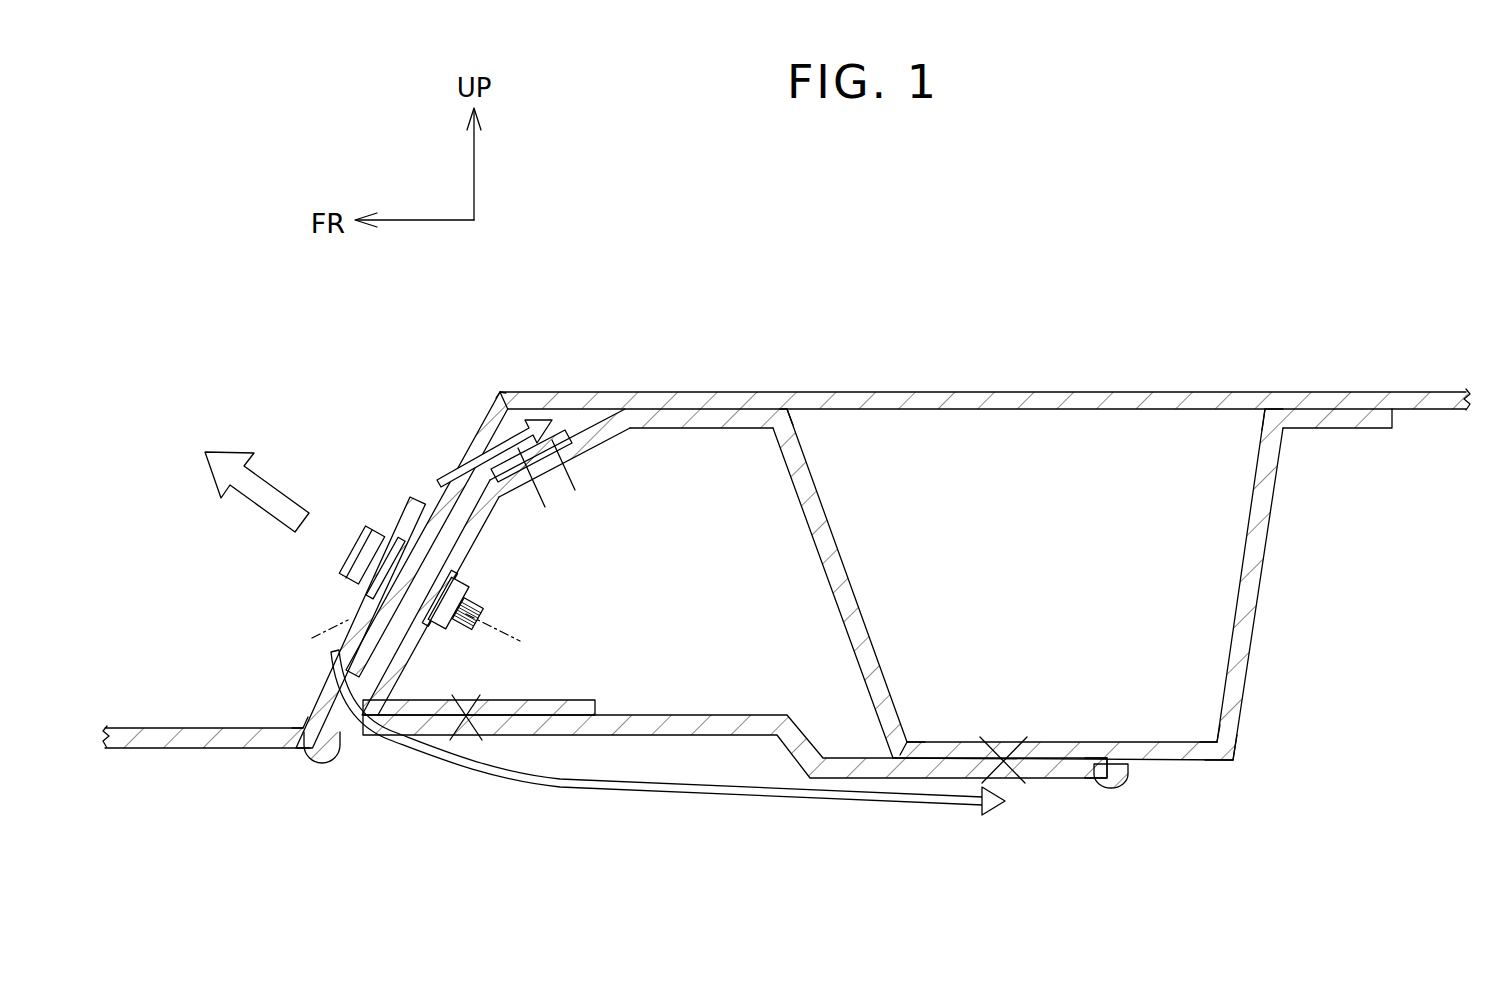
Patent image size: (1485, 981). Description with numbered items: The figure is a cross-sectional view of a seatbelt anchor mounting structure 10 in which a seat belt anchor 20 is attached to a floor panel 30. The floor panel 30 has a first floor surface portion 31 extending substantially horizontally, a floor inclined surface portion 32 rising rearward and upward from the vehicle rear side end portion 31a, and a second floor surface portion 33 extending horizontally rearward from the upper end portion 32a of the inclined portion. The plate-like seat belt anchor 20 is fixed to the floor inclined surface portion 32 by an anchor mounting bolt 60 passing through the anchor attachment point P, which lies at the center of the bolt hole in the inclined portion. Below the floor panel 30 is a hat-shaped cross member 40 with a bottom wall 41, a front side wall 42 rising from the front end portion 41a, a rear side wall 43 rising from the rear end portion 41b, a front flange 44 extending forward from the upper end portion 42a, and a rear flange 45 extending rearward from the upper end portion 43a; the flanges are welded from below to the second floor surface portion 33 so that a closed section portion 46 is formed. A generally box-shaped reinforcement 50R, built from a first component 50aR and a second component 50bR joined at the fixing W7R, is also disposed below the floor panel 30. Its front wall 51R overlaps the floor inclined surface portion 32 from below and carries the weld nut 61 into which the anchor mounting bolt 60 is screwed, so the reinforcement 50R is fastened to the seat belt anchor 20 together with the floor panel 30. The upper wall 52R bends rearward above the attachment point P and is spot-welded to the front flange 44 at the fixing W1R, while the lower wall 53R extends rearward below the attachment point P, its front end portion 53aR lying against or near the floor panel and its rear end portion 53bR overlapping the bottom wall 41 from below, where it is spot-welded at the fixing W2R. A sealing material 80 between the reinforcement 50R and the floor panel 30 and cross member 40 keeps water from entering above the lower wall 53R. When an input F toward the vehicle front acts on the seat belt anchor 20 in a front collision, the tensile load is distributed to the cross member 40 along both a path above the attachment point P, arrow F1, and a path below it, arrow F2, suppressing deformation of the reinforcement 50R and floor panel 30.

The seatbelt anchor mounting structure 10 is at (420, 355).
The seat belt anchor 20 is at (427, 515).
The floor panel 30 is at (1207, 388).
The first floor surface portion 31 is at (211, 742).
The vehicle rear side end portion of first floor surface portion 31a is at (302, 726).
The floor inclined surface portion 32 is at (493, 423).
The upper end portion of floor inclined surface portion 32a is at (500, 390).
The second floor surface portion 33 is at (1099, 390).
The cross member 40 is at (1280, 538).
The bottom wall 41 is at (1153, 740).
The vehicle front side end portion of bottom wall 41a is at (906, 740).
The vehicle rear side end portion of bottom wall 41b is at (1219, 747).
The front side wall 42 is at (850, 585).
The upper end portion of front side wall 42a is at (791, 413).
The rear side wall 43 is at (1257, 570).
The upper end portion of rear side wall 43a is at (1264, 416).
The front flange 44 is at (668, 431).
The rear flange 45 is at (1360, 421).
The closed section portion 46 is at (1246, 746).
The reinforcement 50R is at (572, 617).
The first component 50aR is at (558, 699).
The second component 50bR is at (673, 721).
The front wall 51R is at (455, 548).
The upper wall 52R is at (577, 483).
The lower wall 53R is at (690, 733).
The vehicle front side end portion of lower wall 53aR is at (334, 752).
The vehicle rear side end portion of lower wall 53bR is at (1102, 771).
The anchor mounting bolt 60 is at (342, 572).
The weld nut 61 is at (462, 586).
The sealing material 80 is at (1123, 784).
The input F is at (244, 447).
The load path above attachment point F1 is at (540, 414).
The load path below attachment point F2 is at (782, 812).
The anchor attachment point P is at (402, 635).
The fixing between upper wall and front flange W1R is at (532, 500).
The fixing between lower wall and bottom wall W2R is at (1012, 737).
The fixing between first rear extending portion and second component W7R is at (470, 696).